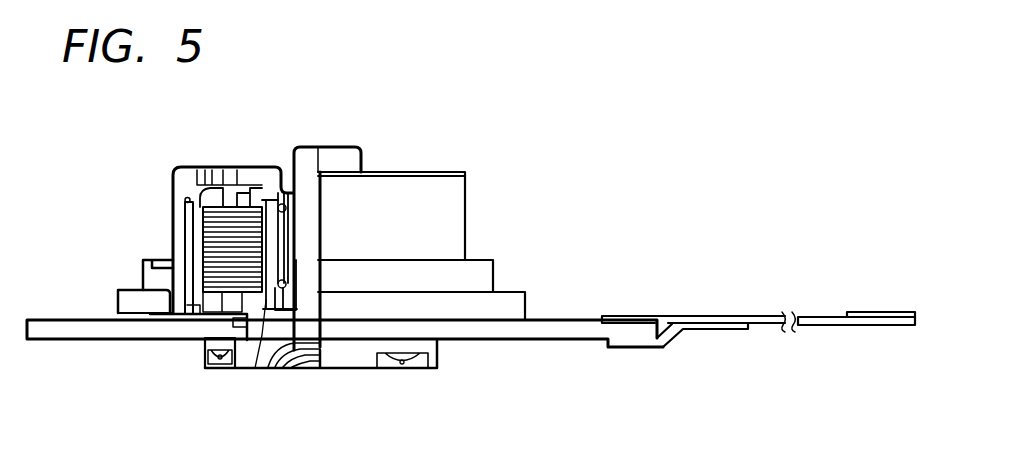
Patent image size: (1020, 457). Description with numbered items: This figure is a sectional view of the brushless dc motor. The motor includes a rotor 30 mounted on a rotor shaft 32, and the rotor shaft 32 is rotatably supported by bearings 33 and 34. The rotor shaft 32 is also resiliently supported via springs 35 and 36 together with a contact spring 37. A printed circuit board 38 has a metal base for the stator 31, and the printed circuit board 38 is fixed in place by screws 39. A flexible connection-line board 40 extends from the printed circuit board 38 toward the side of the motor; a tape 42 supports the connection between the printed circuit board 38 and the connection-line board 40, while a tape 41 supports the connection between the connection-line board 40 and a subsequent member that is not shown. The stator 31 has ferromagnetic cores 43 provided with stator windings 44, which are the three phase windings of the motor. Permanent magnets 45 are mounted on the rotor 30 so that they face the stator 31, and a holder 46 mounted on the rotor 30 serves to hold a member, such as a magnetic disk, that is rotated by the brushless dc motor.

The rotor 30 is at (164, 253).
The stator 31 is at (262, 204).
The rotor shaft 32 is at (310, 190).
The bearing 33 is at (312, 230).
The bearing 34 is at (248, 358).
The spring 35 is at (323, 266).
The spring 36 is at (294, 384).
The contact spring 37 is at (321, 388).
The printed circuit board 38 is at (345, 371).
The screws 39 is at (212, 382).
The flexible connection-line board 40 is at (758, 298).
The tape 41 is at (881, 290).
The tape 42 is at (702, 363).
The ferromagnetic cores 43 is at (217, 218).
The stator windings 44 is at (248, 209).
The permanent magnets 45 is at (160, 246).
The holder 46 is at (127, 256).